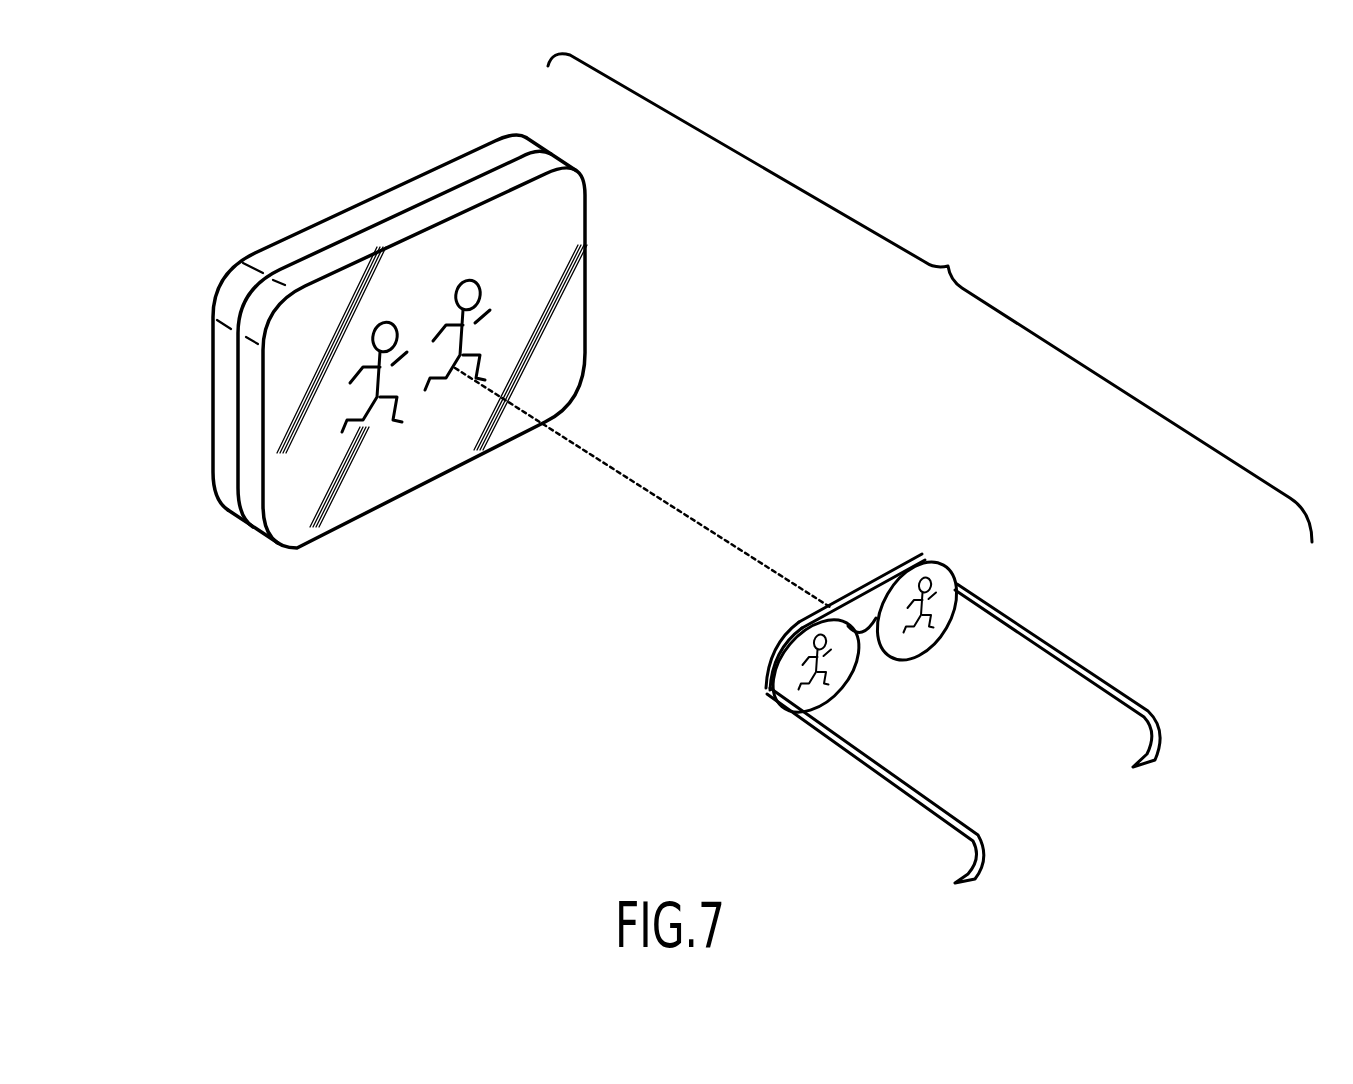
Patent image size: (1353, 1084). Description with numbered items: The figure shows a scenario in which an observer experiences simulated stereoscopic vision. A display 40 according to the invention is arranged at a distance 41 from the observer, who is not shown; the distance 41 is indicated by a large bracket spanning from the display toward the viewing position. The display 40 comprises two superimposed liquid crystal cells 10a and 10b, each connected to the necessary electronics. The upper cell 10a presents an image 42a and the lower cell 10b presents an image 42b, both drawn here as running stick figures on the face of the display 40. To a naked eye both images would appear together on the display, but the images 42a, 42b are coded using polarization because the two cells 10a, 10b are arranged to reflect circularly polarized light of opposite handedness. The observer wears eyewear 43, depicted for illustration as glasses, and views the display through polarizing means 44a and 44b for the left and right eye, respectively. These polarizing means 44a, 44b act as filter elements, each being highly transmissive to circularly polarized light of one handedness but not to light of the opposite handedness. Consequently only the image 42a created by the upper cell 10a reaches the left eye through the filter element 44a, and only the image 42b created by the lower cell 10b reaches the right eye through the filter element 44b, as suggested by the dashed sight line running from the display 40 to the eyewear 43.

The display 40 is at (572, 228).
The distance 41 is at (930, 298).
The upper liquid crystal cell 10a is at (252, 503).
The lower liquid crystal cell 10b is at (225, 487).
The image 42a is at (407, 417).
The image 42b is at (467, 340).
The eyewear 43 is at (770, 723).
The polarizing means 44a is at (798, 633).
The polarizing means 44b is at (930, 560).